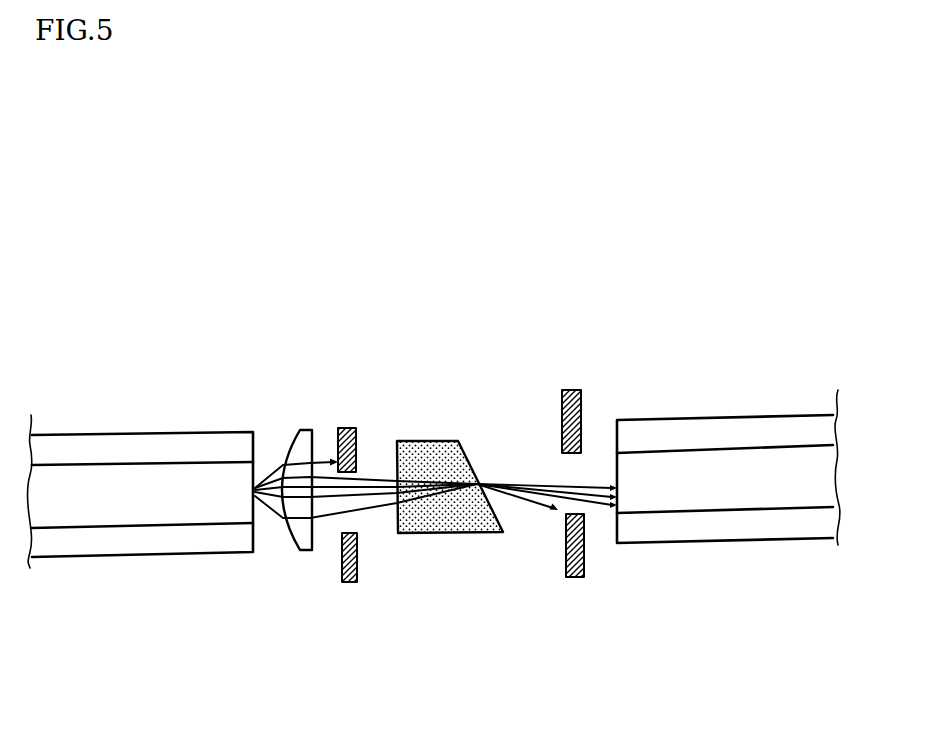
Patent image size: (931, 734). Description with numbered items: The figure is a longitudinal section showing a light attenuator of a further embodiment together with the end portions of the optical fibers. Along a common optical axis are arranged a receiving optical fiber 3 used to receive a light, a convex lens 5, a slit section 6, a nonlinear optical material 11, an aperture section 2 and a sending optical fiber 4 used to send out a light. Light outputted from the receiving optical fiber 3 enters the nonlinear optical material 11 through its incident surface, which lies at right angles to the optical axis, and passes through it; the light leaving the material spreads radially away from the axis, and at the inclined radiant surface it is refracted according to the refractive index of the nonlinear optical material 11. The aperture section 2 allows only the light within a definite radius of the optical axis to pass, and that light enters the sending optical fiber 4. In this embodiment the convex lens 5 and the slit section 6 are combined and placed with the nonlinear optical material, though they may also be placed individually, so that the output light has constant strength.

The aperture section 2 is at (573, 388).
The receiving optical fiber 3 is at (155, 432).
The sending optical fiber 4 is at (680, 415).
The convex lens 5 is at (302, 428).
The slit section 6 is at (350, 427).
The nonlinear optical material 11 is at (423, 441).